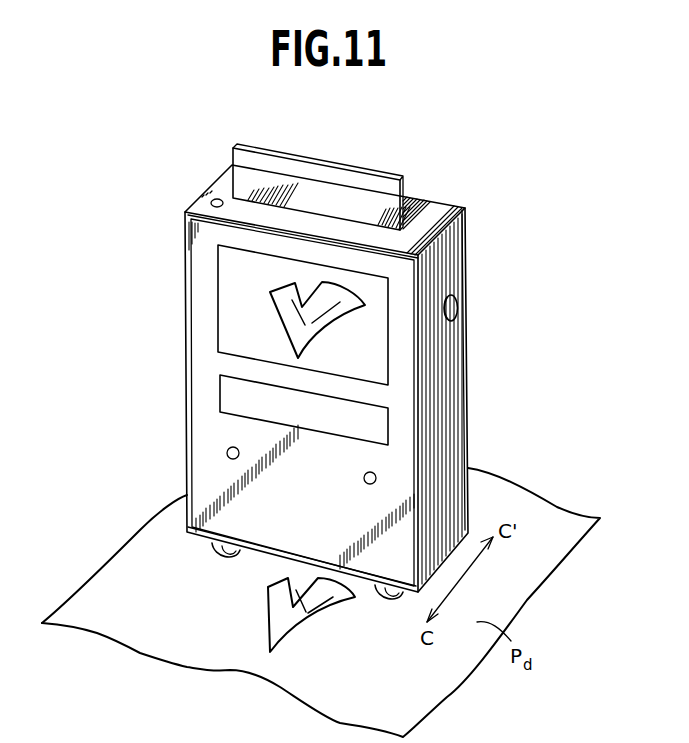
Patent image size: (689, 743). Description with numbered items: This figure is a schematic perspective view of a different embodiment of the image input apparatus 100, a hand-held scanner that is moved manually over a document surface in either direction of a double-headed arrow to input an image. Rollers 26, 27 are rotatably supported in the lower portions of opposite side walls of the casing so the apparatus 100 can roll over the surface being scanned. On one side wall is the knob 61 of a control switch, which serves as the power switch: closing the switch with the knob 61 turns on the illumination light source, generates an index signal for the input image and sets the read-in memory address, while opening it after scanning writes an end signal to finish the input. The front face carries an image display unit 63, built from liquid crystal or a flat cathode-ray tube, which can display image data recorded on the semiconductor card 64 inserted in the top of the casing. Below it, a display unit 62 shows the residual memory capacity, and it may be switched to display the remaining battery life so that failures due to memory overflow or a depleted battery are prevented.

The image input apparatus 100 is at (153, 344).
The semiconductor card 64 is at (377, 175).
The knob of control switch 61 is at (458, 303).
The image display unit 63 is at (381, 355).
The display unit 62 is at (383, 427).
The roller 27 is at (215, 550).
The roller 26 is at (383, 597).